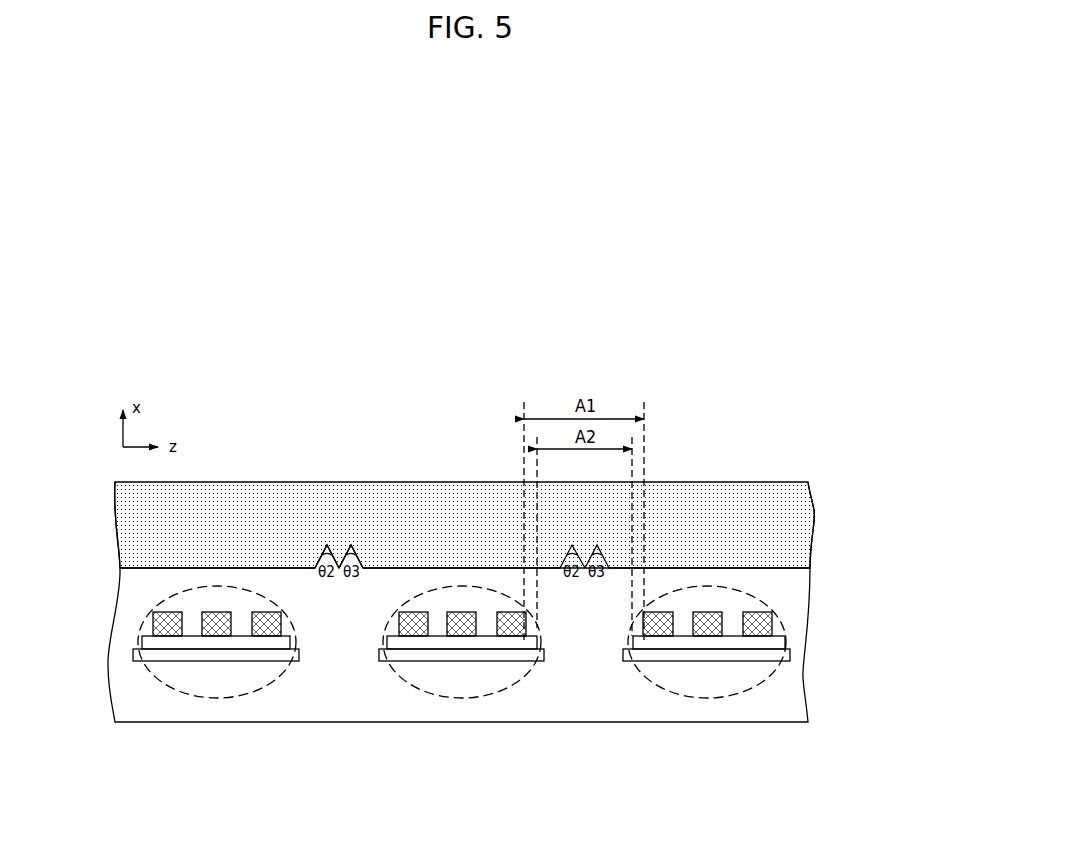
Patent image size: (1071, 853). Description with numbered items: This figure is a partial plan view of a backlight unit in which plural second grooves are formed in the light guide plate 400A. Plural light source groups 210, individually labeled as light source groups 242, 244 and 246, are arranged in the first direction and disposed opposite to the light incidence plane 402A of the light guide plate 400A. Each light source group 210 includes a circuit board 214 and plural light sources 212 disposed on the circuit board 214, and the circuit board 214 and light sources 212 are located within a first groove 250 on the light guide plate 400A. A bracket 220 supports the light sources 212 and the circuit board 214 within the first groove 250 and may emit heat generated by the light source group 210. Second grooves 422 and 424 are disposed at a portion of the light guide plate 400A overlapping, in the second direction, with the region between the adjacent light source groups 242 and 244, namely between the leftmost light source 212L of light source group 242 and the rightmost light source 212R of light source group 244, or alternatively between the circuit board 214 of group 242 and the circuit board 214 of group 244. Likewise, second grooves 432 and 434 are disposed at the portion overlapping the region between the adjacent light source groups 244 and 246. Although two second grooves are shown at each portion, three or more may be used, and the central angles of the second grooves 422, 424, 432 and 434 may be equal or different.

The light guide plate 400A is at (808, 531).
The light incidence plane 402A is at (797, 567).
The second groove 432 is at (327, 545).
The second groove 434 is at (351, 545).
The second groove 422 is at (572, 545).
The second groove 424 is at (597, 545).
The light source 212 is at (754, 693).
The circuit board 214 is at (772, 644).
The bracket 220 is at (777, 656).
The light source group 210 is at (781, 693).
The first groove 250 is at (797, 705).
The light source group 246 is at (232, 698).
The light source group 244 is at (471, 685).
The light source group 242 is at (776, 685).
The rightmost light source 212R is at (512, 630).
The leftmost light source 212L is at (658, 630).